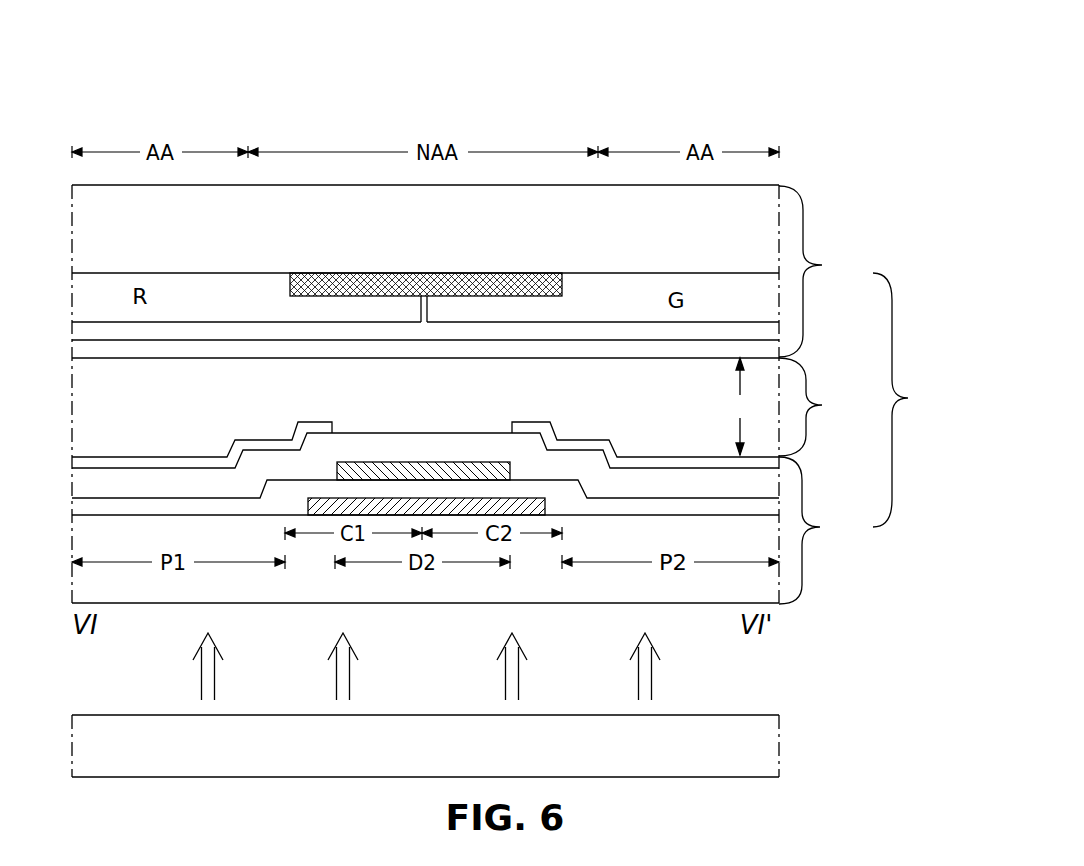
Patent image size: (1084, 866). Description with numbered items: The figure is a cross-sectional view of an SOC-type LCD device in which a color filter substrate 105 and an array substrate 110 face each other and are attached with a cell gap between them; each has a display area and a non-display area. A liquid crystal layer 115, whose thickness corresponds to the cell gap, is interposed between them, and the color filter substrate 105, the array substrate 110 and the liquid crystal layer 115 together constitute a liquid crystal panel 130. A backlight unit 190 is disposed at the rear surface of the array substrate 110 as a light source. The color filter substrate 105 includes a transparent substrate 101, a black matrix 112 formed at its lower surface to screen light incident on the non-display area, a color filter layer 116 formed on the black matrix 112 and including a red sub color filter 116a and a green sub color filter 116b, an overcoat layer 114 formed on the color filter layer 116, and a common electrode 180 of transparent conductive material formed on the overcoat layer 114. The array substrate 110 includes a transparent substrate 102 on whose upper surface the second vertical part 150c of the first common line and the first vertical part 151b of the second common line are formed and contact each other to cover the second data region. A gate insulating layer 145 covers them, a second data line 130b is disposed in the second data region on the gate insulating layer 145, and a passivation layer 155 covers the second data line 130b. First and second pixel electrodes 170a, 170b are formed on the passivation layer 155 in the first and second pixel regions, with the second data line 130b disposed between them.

The transparent substrate 101 is at (762, 217).
The transparent substrate 102 is at (763, 597).
The color filter substrate 105 is at (824, 271).
The array substrate 110 is at (820, 530).
The black matrix 112 is at (267, 288).
The overcoat layer 114 is at (562, 338).
The liquid crystal layer 115 is at (802, 407).
The color filter layer 116 is at (478, 57).
The red sub color filter 116a is at (205, 298).
The green sub color filter 116b is at (650, 298).
The liquid crystal panel 130 is at (911, 400).
The second data line 130b is at (417, 461).
The gate insulating layer 145 is at (642, 503).
The second vertical part of the first common line 150c is at (377, 517).
The first vertical part of the second common line 151b is at (470, 514).
The passivation layer 155 is at (474, 445).
The first pixel electrode 170a is at (148, 458).
The second pixel electrode 170b is at (675, 461).
The common electrode 180 is at (352, 349).
The backlight unit 190 is at (758, 745).